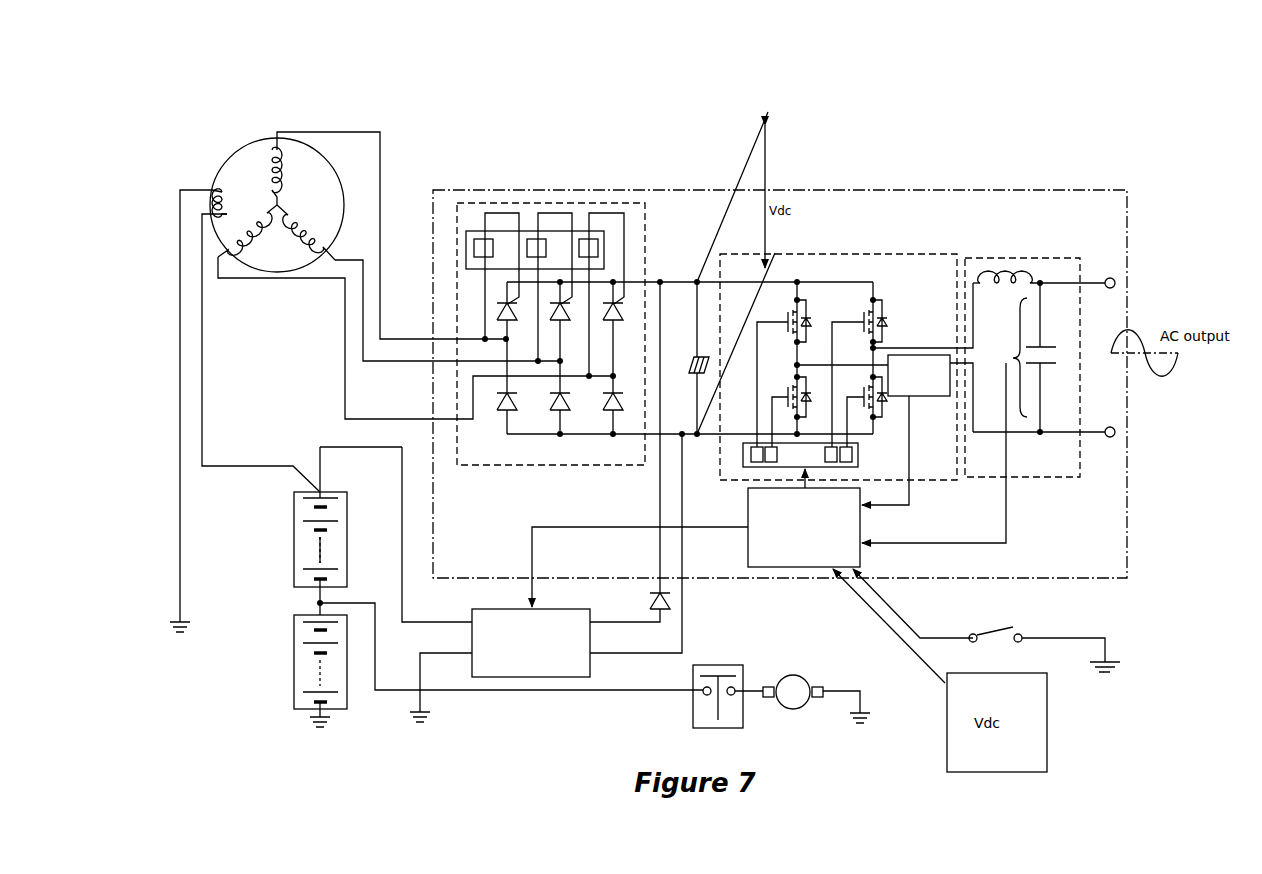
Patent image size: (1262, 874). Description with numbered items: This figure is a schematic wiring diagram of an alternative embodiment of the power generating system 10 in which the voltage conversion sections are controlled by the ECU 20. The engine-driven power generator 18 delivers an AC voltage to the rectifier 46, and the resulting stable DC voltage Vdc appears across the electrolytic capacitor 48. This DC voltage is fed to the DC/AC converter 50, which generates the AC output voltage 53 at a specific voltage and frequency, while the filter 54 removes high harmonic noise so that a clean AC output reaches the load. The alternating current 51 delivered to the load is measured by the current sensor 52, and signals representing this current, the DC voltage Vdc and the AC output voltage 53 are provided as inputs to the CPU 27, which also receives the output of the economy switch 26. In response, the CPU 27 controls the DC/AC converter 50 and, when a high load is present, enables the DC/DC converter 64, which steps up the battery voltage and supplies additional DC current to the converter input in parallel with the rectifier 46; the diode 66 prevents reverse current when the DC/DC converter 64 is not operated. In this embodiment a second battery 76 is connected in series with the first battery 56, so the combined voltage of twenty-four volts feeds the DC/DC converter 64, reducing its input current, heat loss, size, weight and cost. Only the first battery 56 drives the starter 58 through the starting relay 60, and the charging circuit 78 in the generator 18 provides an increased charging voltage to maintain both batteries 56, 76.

The power supply system 10 is at (587, 75).
The power generator 18 is at (243, 157).
The charging circuit 78 is at (223, 192).
The ECU 20 is at (950, 190).
The rectifier 46 is at (580, 200).
The electrolytic capacitor 48 is at (687, 352).
The DC/AC converter 50 is at (838, 252).
The current sensor 52 is at (925, 398).
The filter 54 is at (1012, 255).
The alternating current 51 is at (910, 497).
The AC output voltage 53 is at (1007, 510).
The CPU 27 is at (820, 570).
The economy switch 26 is at (973, 633).
The starting relay 60 is at (718, 663).
The starter 58 is at (797, 675).
The DC/DC converter 64 is at (502, 608).
The diode 66 is at (653, 607).
The second battery 76 is at (292, 527).
The first battery 56 is at (292, 665).